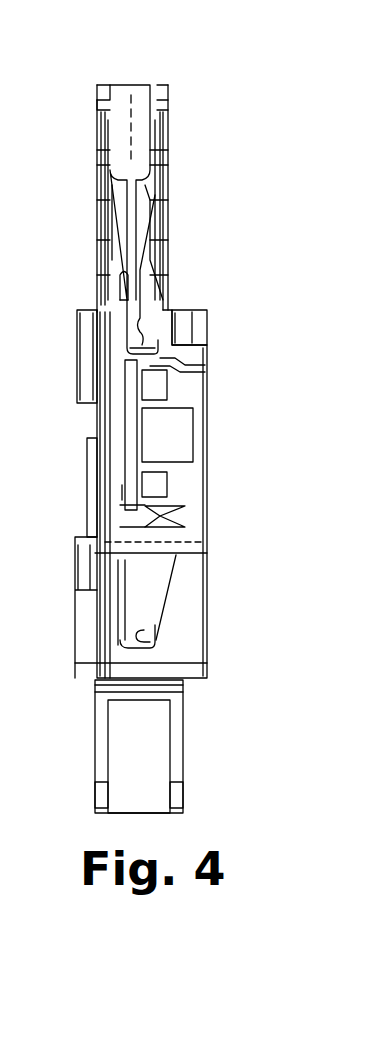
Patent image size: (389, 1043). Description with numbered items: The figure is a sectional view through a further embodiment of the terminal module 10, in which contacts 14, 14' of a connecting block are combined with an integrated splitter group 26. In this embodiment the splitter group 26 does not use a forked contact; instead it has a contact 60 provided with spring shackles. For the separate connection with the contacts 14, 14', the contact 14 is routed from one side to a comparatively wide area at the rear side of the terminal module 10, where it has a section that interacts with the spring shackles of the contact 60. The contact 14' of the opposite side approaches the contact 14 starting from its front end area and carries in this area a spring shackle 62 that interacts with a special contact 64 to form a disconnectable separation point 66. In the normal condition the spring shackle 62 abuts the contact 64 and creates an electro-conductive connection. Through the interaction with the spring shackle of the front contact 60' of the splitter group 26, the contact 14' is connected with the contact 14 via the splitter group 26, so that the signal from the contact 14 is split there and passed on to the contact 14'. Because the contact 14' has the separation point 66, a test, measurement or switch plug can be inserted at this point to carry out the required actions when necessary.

The terminal module 10 is at (175, 66).
The contact 14 is at (77, 198).
The contact 14' is at (180, 197).
The splitter group 26 is at (182, 443).
The contact 60 is at (188, 520).
The front contact 60' is at (206, 359).
The spring shackle 62 is at (148, 312).
The contact 64 is at (118, 346).
The separation point 66 is at (130, 318).